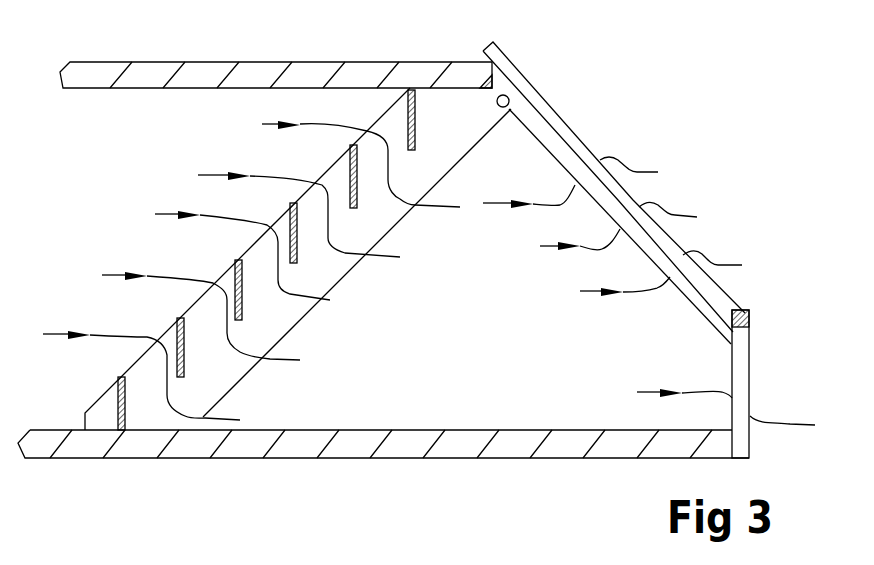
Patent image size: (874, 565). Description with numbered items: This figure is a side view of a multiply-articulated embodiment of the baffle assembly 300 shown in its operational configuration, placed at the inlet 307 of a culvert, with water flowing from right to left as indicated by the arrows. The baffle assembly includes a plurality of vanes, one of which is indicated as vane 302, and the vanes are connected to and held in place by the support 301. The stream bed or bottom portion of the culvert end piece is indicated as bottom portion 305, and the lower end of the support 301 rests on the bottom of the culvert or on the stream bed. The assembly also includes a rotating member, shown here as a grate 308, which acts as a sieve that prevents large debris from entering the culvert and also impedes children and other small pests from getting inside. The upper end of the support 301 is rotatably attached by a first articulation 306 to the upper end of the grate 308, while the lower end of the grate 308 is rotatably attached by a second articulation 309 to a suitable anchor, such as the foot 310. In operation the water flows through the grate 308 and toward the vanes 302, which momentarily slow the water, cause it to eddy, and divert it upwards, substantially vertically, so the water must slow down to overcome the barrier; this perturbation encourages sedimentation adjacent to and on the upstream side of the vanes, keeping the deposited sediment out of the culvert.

The baffle assembly 300 is at (709, 183).
The support 301 is at (470, 137).
The vane 302 is at (243, 378).
The stream bed or bottom portion of the culvert end piece 305 is at (350, 458).
The first articulation 306 is at (522, 75).
The inlet 307 is at (468, 62).
The grate 308 is at (549, 104).
The second articulation 309 is at (749, 311).
The foot 310 is at (749, 360).